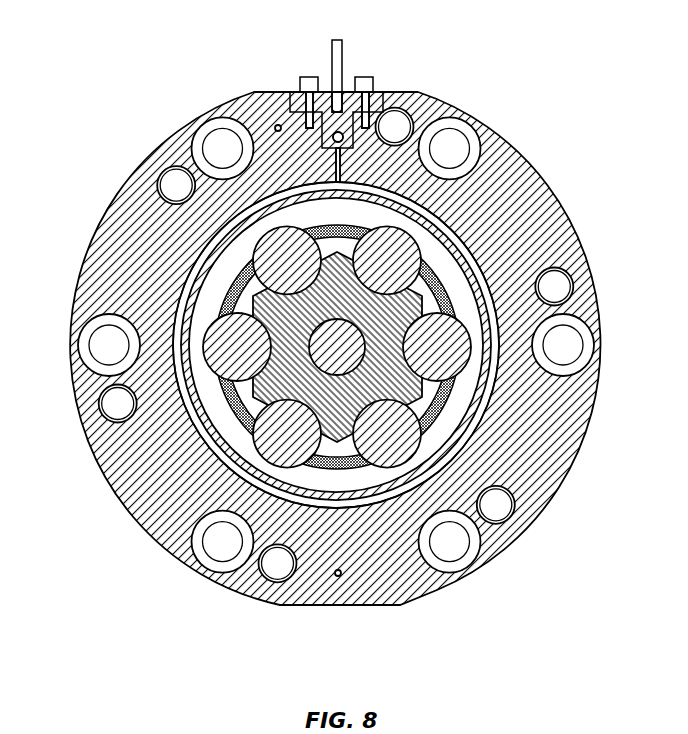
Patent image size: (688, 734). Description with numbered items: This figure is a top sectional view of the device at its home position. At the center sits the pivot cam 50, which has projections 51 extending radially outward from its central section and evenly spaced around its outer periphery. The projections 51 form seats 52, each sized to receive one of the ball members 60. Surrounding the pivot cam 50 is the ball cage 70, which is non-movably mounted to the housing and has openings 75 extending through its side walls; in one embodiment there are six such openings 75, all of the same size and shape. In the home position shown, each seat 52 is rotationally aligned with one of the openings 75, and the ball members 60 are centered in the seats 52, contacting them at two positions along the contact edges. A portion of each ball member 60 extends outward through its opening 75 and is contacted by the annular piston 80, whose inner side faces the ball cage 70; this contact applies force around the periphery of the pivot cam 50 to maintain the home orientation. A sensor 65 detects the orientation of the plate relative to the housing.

The pivot cam 50 is at (385, 305).
The projections 51 is at (340, 262).
The seats 52 is at (428, 262).
The ball members 60 is at (272, 315).
The sensor 65 is at (343, 52).
The ball cage 70 is at (238, 292).
The openings 75 is at (243, 275).
The piston 80 is at (200, 313).